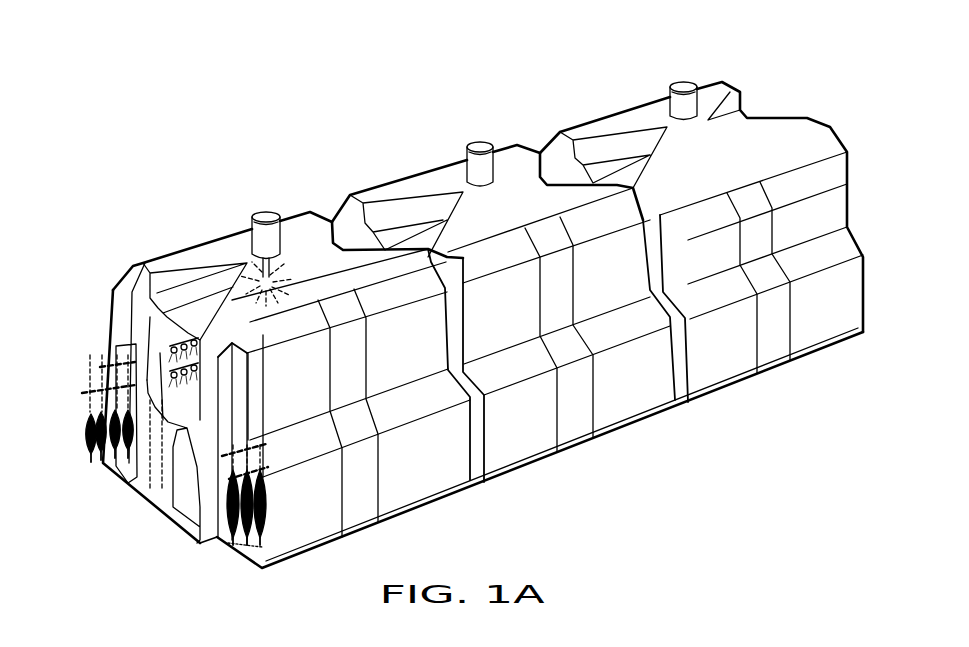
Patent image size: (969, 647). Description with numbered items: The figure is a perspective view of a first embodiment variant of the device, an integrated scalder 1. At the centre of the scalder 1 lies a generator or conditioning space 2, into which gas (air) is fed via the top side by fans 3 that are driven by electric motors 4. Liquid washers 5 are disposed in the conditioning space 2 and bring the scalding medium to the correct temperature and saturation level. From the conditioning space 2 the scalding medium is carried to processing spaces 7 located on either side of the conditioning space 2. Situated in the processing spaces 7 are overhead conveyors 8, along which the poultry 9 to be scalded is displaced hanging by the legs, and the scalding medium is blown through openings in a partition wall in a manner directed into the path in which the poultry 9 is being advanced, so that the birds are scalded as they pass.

The integrated scalder 1 is at (483, 325).
The conditioning space 2 is at (156, 506).
The fan 3 is at (298, 278).
The electric motor 4 is at (267, 212).
The liquid washer 5 is at (197, 342).
The processing space 7 is at (122, 462).
The overhead conveyor 8 is at (100, 388).
The poultry 9 is at (90, 436).